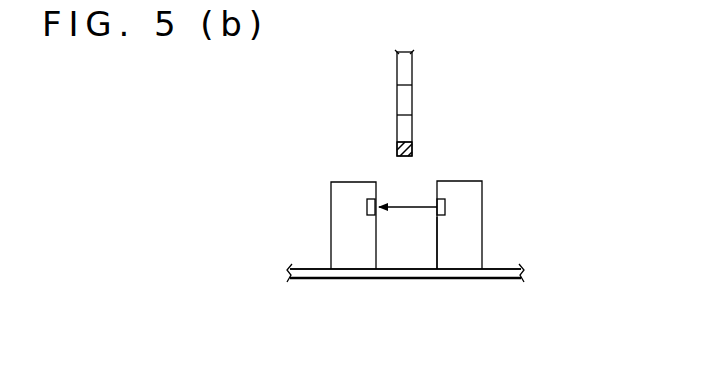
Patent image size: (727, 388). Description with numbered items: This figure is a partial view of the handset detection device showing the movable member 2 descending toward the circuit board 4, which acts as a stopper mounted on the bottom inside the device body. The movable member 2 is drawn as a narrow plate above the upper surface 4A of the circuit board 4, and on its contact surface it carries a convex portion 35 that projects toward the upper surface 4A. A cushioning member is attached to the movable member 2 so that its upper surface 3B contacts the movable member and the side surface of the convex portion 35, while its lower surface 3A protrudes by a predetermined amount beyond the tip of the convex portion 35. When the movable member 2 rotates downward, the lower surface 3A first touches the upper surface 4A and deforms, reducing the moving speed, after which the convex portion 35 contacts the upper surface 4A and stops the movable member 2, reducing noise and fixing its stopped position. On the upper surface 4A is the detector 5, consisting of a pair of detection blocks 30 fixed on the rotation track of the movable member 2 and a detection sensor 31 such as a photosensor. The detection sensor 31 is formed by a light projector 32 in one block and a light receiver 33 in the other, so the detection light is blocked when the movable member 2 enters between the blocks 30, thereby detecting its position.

The movable member 2 is at (412, 64).
The lower surface of the cushioning member 3A is at (405, 157).
The upper surface of the cushioning member 3B is at (398, 112).
The convex portion 35 is at (397, 125).
The detection blocks 30 is at (342, 192).
The detection sensor 31 is at (446, 219).
The light projector 32 is at (445, 205).
The light receiver 33 is at (367, 203).
The circuit board 4 is at (355, 287).
The upper surface of the circuit board 4A is at (307, 268).
The detector 5 is at (436, 250).